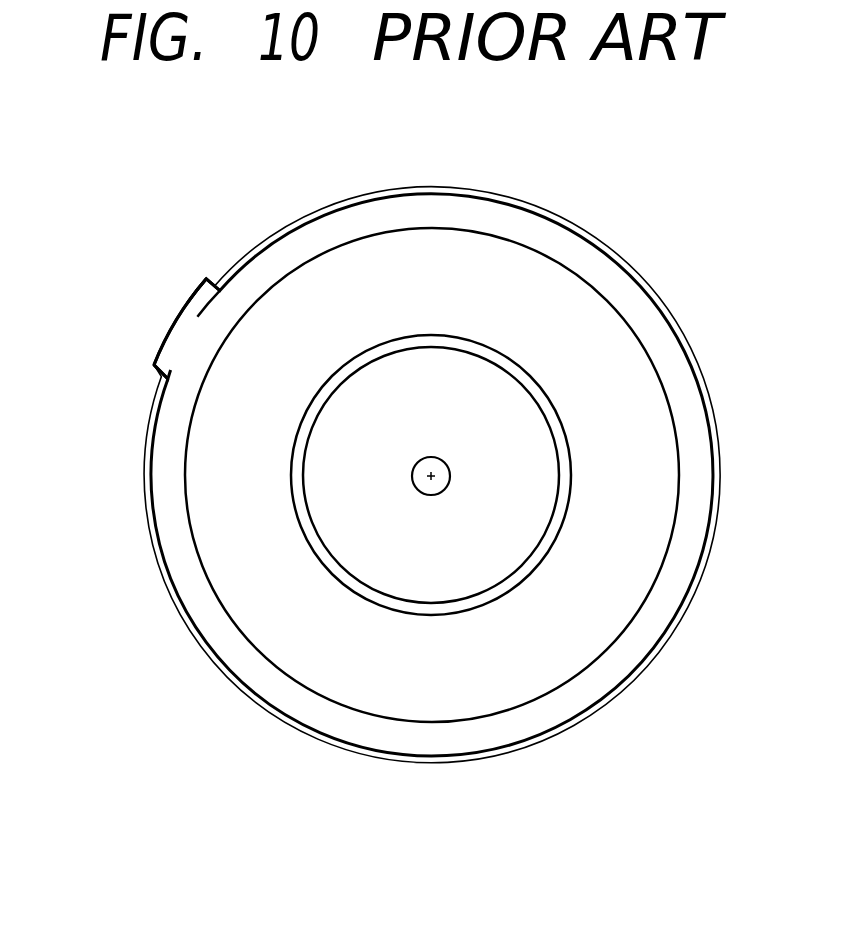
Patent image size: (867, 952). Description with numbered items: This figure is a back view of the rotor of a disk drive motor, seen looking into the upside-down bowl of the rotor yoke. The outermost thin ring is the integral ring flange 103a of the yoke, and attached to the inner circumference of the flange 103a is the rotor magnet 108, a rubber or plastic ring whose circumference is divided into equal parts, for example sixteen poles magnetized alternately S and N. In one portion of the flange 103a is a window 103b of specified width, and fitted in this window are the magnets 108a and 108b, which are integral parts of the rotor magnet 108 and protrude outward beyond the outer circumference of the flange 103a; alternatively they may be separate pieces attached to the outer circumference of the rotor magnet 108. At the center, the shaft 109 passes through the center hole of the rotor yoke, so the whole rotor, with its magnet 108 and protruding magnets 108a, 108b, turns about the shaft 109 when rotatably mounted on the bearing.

The ring flange 103a is at (190, 608).
The window 103b is at (190, 298).
The rotor magnet 108 is at (607, 275).
The magnet 108a is at (173, 337).
The magnet 108b is at (198, 317).
The shaft 109 is at (422, 458).